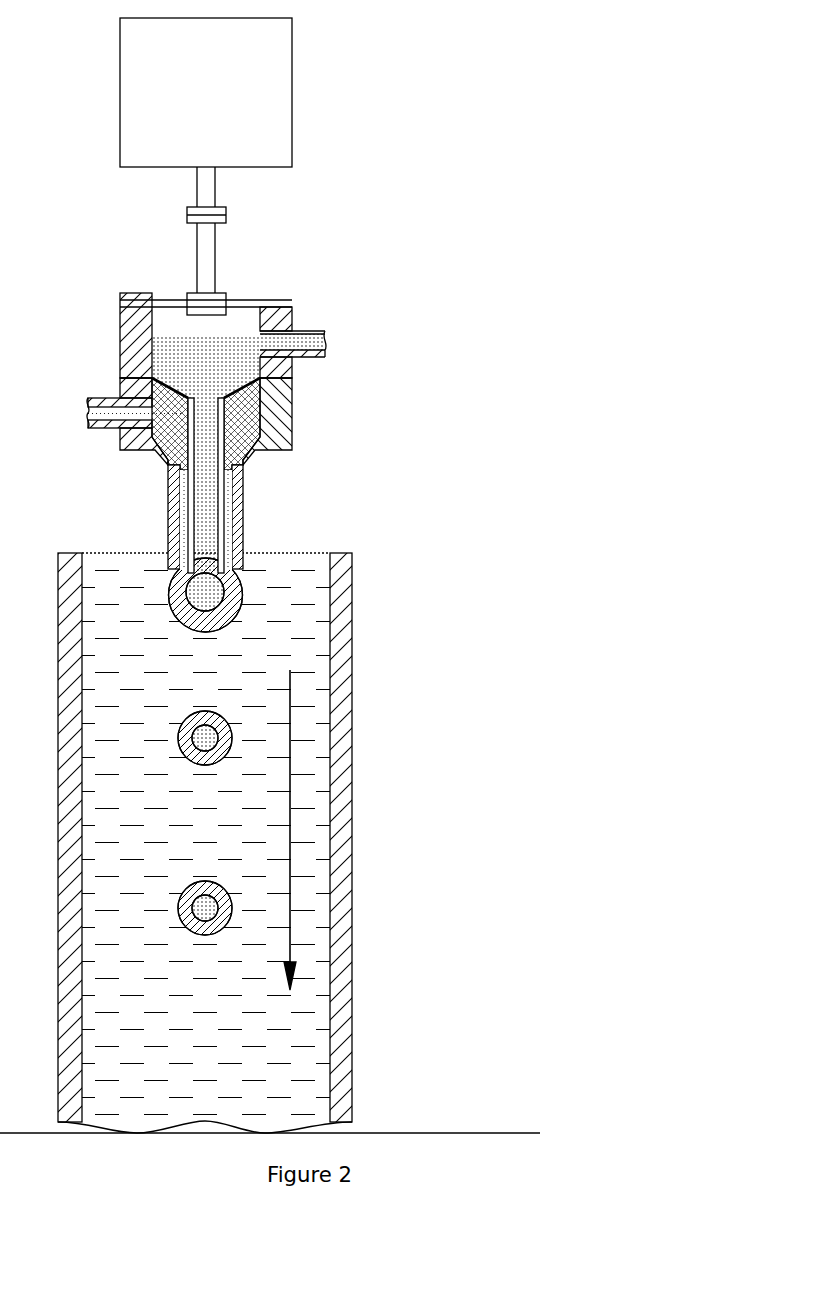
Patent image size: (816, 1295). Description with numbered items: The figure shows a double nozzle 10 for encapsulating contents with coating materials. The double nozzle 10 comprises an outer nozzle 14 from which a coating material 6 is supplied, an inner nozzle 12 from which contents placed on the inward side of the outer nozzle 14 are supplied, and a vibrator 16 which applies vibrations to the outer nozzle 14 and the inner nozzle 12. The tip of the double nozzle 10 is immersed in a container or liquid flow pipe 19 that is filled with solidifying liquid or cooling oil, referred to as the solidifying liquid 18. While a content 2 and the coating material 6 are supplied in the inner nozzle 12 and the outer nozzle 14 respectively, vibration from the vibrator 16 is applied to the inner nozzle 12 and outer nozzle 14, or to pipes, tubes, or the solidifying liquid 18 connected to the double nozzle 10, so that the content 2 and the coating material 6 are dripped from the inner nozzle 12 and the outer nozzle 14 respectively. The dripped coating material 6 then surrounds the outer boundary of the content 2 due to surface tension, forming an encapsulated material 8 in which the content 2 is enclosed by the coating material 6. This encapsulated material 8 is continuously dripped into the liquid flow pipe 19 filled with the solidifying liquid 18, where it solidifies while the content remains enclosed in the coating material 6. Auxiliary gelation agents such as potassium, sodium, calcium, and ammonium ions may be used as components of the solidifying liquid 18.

The double nozzle 10 is at (418, 102).
The vibrator 16 is at (273, 98).
The content 2 is at (241, 323).
The inner nozzle 12 is at (292, 312).
The outer nozzle 14 is at (292, 441).
The coating material 6 is at (162, 456).
The encapsulated material 8 is at (233, 709).
The liquid flow pipe 19 is at (352, 737).
The solidifying liquid 18 is at (295, 1005).